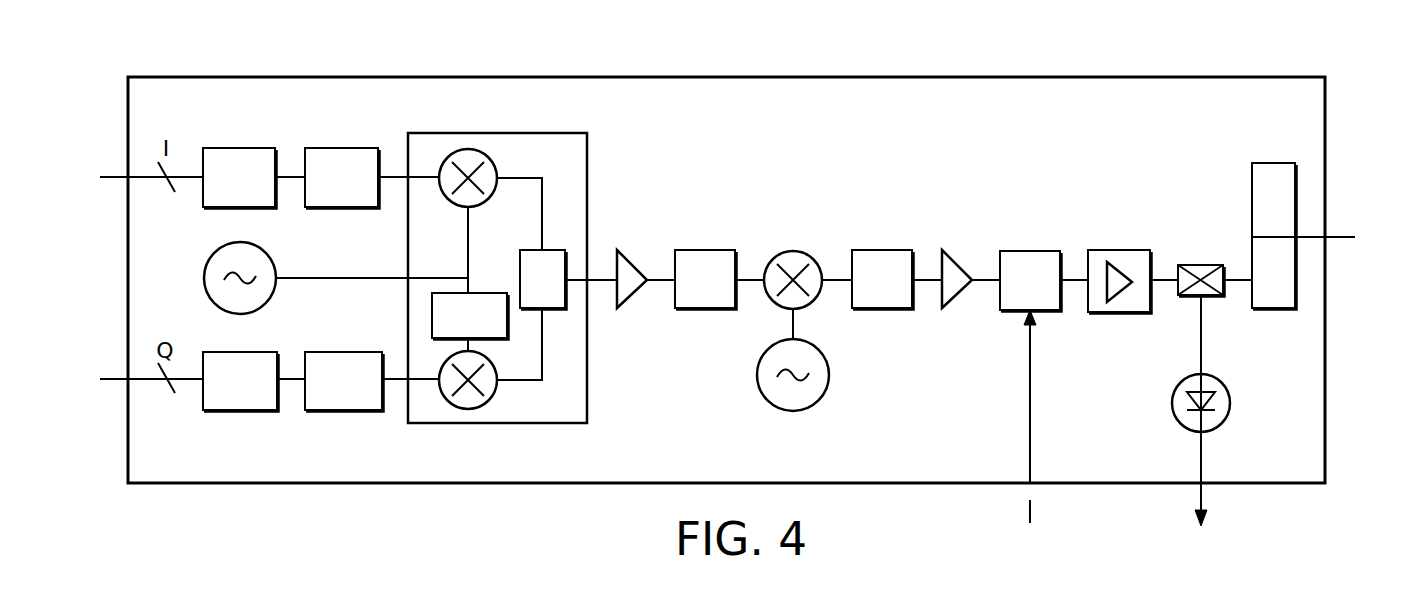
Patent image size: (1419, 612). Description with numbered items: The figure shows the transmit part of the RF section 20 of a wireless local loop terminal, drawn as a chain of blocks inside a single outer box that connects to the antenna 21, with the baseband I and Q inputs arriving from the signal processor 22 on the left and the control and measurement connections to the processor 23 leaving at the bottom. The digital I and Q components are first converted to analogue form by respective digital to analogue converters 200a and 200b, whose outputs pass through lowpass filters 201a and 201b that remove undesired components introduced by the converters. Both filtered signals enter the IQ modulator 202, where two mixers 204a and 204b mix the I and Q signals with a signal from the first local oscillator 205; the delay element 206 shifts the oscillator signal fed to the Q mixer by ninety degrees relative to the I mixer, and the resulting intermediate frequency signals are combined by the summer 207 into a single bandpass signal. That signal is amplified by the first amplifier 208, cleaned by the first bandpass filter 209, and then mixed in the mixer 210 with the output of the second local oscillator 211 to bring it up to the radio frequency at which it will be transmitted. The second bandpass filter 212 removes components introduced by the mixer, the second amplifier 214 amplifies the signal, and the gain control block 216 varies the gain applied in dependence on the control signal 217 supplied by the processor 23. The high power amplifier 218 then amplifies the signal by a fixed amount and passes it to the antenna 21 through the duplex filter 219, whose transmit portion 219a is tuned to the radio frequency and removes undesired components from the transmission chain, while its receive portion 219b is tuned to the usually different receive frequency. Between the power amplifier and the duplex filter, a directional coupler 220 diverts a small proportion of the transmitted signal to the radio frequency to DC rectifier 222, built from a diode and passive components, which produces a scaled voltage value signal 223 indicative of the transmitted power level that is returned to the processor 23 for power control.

The RF section 20 is at (1277, 77).
The antenna 21 is at (1333, 238).
The signal processor 22 is at (92, 280).
The processor 23 is at (1116, 528).
The digital to analogue converter 200a is at (239, 178).
The digital to analogue converter 200b is at (240, 381).
The lowpass filter 201a is at (342, 178).
The lowpass filter 201b is at (344, 381).
The IQ modulator 202 is at (590, 145).
The mixer 204a is at (462, 152).
The mixer 204b is at (462, 409).
The first local oscillator 205 is at (205, 272).
The delay element 206 is at (432, 312).
The summer 207 is at (566, 301).
The first amplifier 208 is at (630, 258).
The first bandpass filter 209 is at (705, 279).
The mixer 210 is at (790, 251).
The second local oscillator 211 is at (829, 367).
The second bandpass filter 212 is at (882, 279).
The second amplifier 214 is at (955, 253).
The gain control block 216 is at (1030, 281).
The control signal 217 is at (1029, 380).
The high power amplifier 218 is at (1112, 250).
The duplex filter 219 is at (1244, 236).
The transmit portion 219a is at (1283, 309).
The receive portion 219b is at (1282, 172).
The directional coupler 220 is at (1196, 265).
The radio frequency to DC rectifier 222 is at (1182, 383).
The voltage value signal 223 is at (1198, 500).